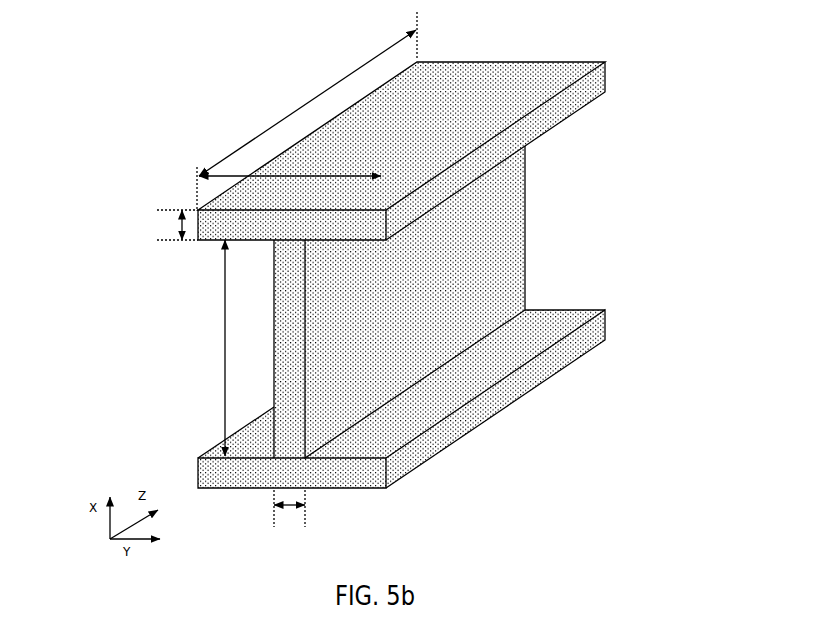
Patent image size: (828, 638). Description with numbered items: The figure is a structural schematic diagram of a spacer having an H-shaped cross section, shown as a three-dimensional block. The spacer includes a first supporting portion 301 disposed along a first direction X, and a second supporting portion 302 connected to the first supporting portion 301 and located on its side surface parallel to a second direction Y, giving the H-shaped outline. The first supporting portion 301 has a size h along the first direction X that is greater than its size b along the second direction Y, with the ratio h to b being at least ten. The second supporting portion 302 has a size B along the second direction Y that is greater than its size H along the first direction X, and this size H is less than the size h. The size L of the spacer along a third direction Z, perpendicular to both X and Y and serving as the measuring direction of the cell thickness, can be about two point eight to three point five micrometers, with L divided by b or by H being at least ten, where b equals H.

The first supporting portion 301 is at (507, 240).
The second supporting portion 302 is at (588, 89).
The size of the spacer along the third direction L is at (307, 111).
The size of the second supporting portion along the second direction B is at (290, 163).
The size of the second supporting portion along the first direction H is at (177, 225).
The size of the first supporting portion along the first direction h is at (208, 348).
The size of the first supporting portion along the second direction b is at (289, 513).